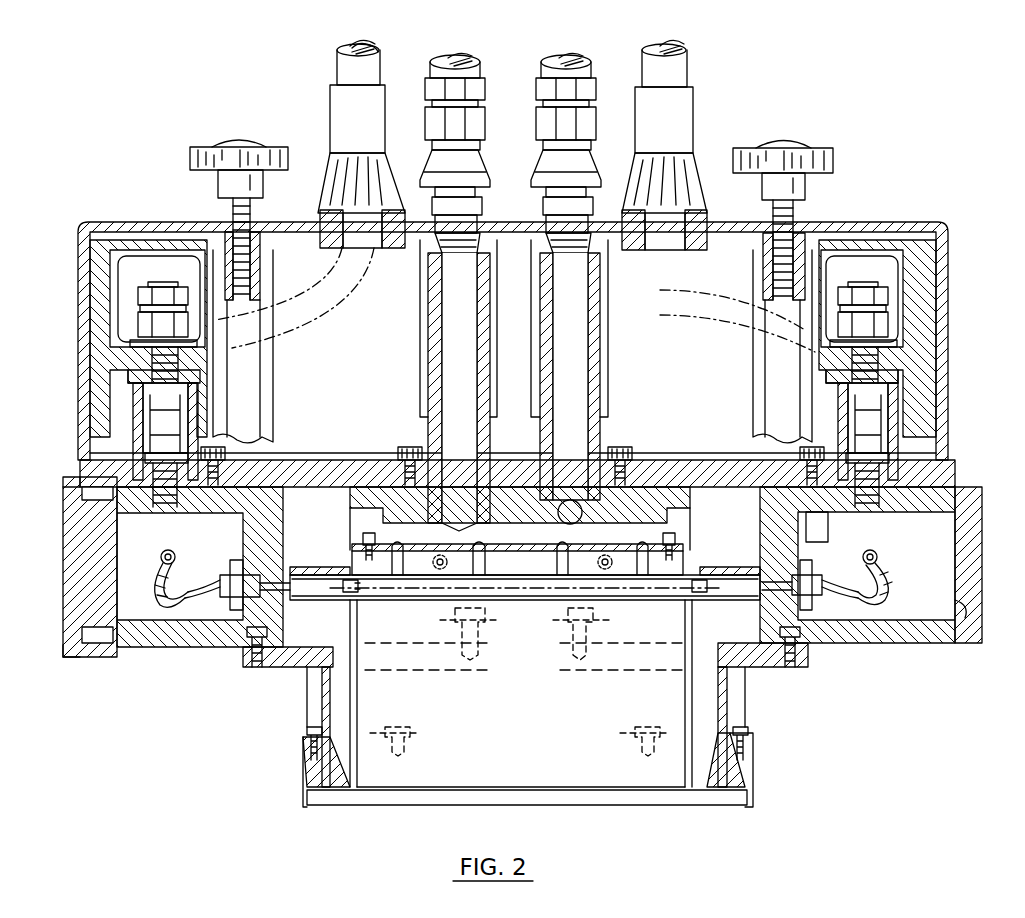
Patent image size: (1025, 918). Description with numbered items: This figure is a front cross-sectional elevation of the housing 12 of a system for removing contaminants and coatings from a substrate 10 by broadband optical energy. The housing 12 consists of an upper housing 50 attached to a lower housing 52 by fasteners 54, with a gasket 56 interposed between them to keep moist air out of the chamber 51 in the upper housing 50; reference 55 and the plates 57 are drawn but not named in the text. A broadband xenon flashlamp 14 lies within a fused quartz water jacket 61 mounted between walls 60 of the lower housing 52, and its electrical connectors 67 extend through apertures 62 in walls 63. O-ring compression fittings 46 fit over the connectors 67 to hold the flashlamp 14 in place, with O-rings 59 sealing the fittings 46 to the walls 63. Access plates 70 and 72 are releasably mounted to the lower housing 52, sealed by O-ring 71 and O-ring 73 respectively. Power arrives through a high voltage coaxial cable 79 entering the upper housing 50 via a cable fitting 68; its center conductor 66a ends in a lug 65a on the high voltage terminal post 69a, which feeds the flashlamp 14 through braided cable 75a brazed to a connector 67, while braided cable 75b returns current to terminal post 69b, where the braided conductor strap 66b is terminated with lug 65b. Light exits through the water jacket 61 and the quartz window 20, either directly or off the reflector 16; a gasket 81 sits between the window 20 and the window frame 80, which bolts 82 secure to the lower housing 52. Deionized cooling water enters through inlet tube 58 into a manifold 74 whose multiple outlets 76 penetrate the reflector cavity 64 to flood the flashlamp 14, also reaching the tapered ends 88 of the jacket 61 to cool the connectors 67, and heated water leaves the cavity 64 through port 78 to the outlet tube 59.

The substrate 10 is at (897, 121).
The housing 12 is at (0, 135).
The broadband xenon flashlamp 14 is at (630, 593).
The reflector 16 is at (347, 702).
The quartz window 20 is at (380, 808).
The O-ring compression fittings 46 is at (208, 620).
The upper housing 50 is at (948, 306).
The chamber 51 is at (681, 380).
The lower housing 52 is at (902, 645).
The fasteners 54 is at (200, 148).
The fittings 55 is at (535, 183).
The gasket 56 is at (955, 452).
The plate 57 is at (273, 388).
The inlet tube 58 is at (462, 58).
The outlet tube 59 is at (572, 58).
The walls 60 is at (283, 510).
The fused quartz water jacket 61 is at (303, 563).
The apertures 62 is at (263, 594).
The walls 63 is at (806, 524).
The reflector cavity 64 is at (503, 716).
The lug 65a is at (120, 290).
The lug 65b is at (890, 310).
The center conductor 66a is at (350, 288).
The braided conductor strap 66b is at (712, 294).
The electrical connectors 67 is at (217, 574).
The cable fitting 68 is at (328, 96).
The high voltage terminal post 69a is at (148, 354).
The terminal post 69b is at (895, 341).
The access plate 70 is at (988, 492).
The O-ring 71 is at (965, 620).
The access plate 72 is at (63, 507).
The O-ring 73 is at (65, 657).
The manifold 74 is at (668, 522).
The braided cable 75a is at (147, 578).
The braided cable 75b is at (882, 569).
The outlets 76 is at (398, 550).
The port 78 is at (567, 482).
The high voltage coaxial cable 79 is at (382, 57).
The window frame 80 is at (753, 776).
The gasket 81 is at (327, 778).
The bolts 82 is at (305, 731).
The tapered ends 88 is at (294, 606).